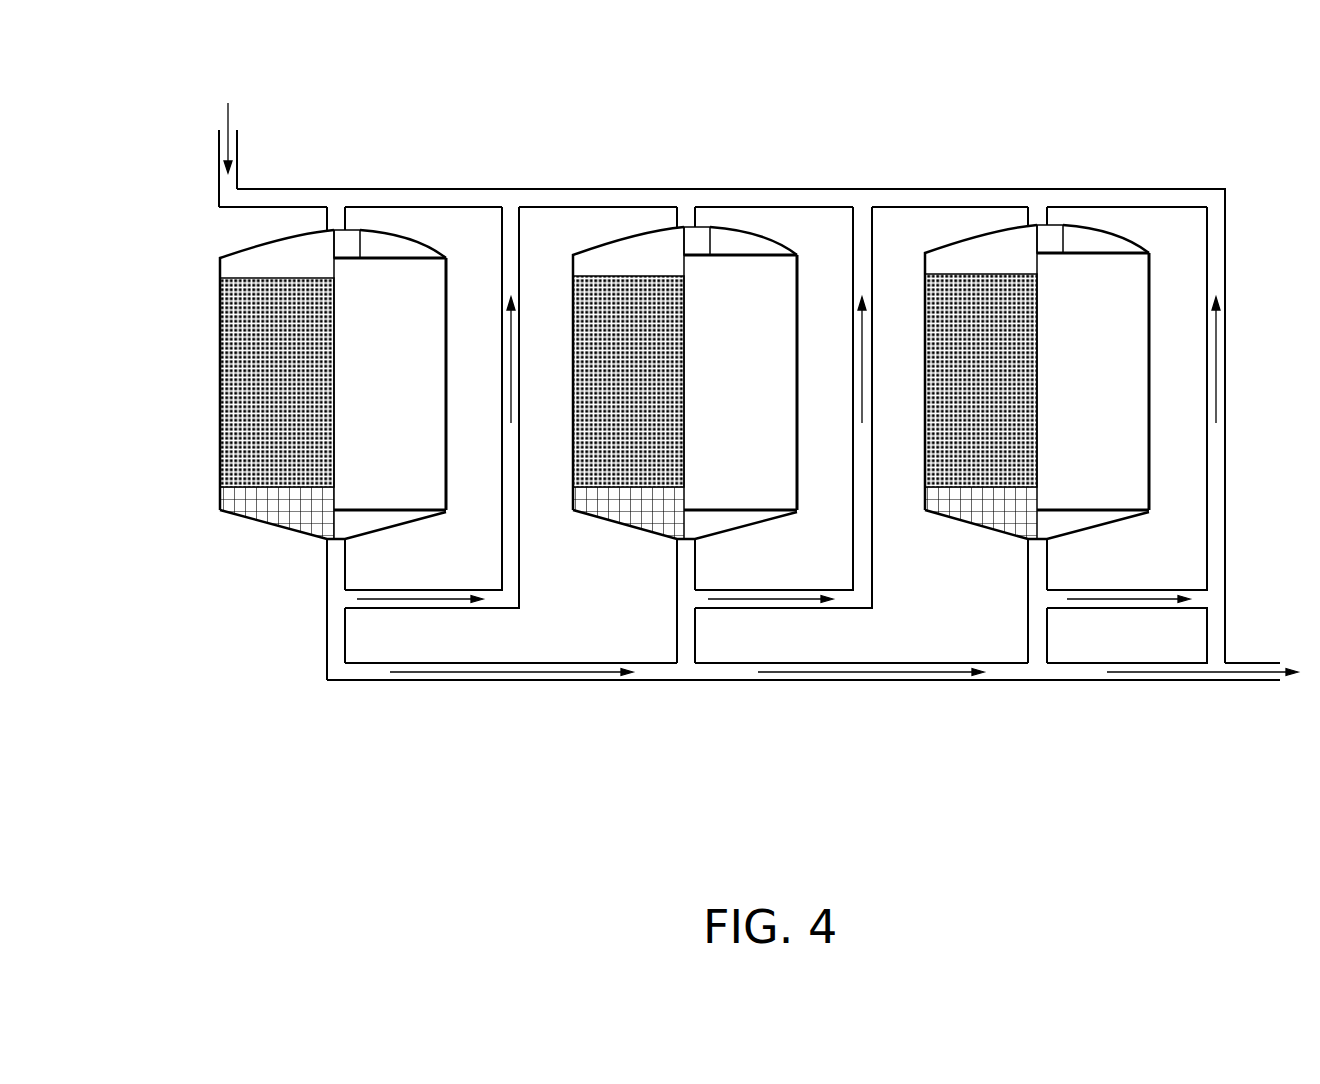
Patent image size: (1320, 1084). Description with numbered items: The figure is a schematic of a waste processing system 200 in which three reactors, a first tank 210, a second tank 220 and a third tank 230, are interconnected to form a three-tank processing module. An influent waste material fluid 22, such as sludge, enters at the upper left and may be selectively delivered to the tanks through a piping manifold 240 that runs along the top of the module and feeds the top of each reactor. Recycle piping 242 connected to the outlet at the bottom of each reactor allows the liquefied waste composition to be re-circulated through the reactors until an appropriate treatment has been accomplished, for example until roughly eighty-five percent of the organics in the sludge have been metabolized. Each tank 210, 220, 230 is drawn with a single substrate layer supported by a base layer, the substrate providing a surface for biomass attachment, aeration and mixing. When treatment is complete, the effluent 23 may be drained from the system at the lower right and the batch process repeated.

The waste processing system 200 is at (309, 747).
The influent waste material fluid 22 is at (225, 112).
The effluent 23 is at (1263, 670).
The piping manifold 240 is at (665, 185).
The recycle piping 242 is at (445, 605).
The first tank 210 is at (302, 533).
The second tank 220 is at (624, 533).
The third tank 230 is at (1002, 533).